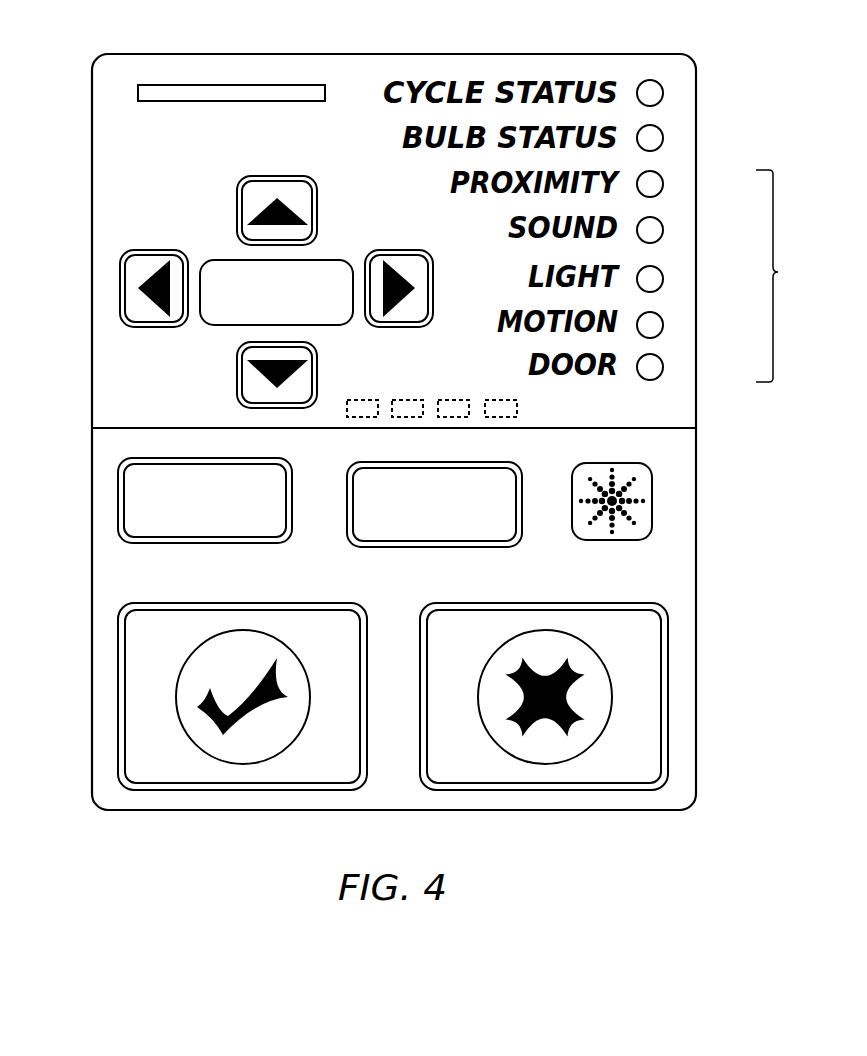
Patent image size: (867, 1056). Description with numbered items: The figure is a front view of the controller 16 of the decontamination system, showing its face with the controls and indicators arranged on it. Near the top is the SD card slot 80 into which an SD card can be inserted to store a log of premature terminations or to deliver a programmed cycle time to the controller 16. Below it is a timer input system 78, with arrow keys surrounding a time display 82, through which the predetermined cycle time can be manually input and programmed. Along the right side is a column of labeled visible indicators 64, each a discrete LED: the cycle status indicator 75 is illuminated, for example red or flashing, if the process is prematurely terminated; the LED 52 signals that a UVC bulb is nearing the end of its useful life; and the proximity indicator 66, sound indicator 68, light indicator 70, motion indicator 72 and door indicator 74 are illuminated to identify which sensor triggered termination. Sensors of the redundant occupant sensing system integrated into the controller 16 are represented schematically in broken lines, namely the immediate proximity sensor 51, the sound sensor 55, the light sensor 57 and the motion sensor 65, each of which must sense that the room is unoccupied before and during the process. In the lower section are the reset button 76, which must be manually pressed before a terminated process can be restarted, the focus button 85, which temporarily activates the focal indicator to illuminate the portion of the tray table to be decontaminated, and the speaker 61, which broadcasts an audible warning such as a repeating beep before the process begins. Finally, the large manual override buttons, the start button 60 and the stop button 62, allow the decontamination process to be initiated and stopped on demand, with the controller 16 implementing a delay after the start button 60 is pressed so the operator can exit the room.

The controller 16 is at (147, 871).
The SD card slot 80 is at (180, 93).
The time display 82 is at (220, 260).
The timer input system 78 is at (180, 360).
The cycle status indicator 75 is at (650, 93).
The LED 52 is at (650, 138).
The proximity indicator 66 is at (650, 184).
The sound indicator 68 is at (650, 230).
The light indicator 70 is at (650, 279).
The motion indicator 72 is at (650, 325).
The door indicator 74 is at (650, 367).
The labeled visible indicators 64 is at (783, 276).
The immediate proximity sensor 51 is at (355, 401).
The sound sensor 55 is at (400, 401).
The light sensor 57 is at (450, 401).
The motion sensor 65 is at (495, 401).
The reset button 76 is at (136, 502).
The focus button 85 is at (409, 524).
The speaker 61 is at (640, 507).
The start button 60 is at (140, 708).
The stop button 62 is at (650, 692).